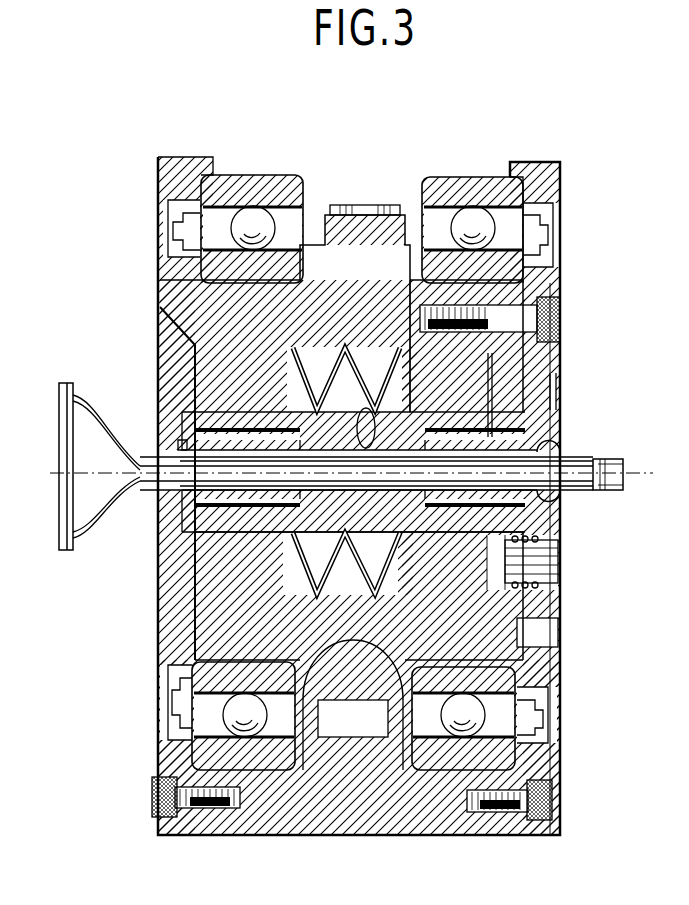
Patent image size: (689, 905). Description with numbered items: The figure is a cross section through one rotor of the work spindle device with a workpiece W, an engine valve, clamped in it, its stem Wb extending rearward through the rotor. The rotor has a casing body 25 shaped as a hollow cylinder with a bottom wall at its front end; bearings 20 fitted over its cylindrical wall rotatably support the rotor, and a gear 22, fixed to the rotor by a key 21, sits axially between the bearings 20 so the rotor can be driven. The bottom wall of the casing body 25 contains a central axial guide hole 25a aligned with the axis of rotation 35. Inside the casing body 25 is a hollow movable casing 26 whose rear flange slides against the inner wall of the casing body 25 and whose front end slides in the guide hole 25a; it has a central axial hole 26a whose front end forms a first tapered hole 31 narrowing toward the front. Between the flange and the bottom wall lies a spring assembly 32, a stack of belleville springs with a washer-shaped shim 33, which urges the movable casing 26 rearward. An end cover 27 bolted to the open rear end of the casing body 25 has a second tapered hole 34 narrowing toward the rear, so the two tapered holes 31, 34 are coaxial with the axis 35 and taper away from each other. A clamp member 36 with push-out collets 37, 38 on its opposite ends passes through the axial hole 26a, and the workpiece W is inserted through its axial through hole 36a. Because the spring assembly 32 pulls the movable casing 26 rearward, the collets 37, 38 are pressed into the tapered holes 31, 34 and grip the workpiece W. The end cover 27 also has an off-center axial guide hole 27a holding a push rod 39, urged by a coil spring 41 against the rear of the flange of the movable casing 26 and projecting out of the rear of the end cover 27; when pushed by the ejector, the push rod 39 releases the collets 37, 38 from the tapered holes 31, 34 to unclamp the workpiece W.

The bearings 20 is at (255, 755).
The key 21 is at (305, 700).
The gear 22 is at (376, 745).
The casing body 25 is at (172, 622).
The central axial guide hole 25a is at (180, 527).
The movable casing 26 is at (237, 415).
The central axial hole 26a is at (358, 415).
The end cover 27 is at (550, 368).
The off-center axial guide hole 27a is at (538, 545).
The first tapered hole 31 is at (195, 442).
The spring assembly 32 is at (308, 347).
The washer-shaped shim 33 is at (413, 360).
The second tapered hole 34 is at (560, 452).
The axis of rotation 35 is at (638, 475).
The clamp member 36 is at (337, 435).
The axial through hole 36a is at (212, 430).
The collet 37 is at (195, 505).
The collet 38 is at (548, 507).
The push rod 39 is at (545, 578).
The coil spring 41 is at (528, 587).
The workpiece W is at (58, 535).
The stem Wb is at (450, 398).